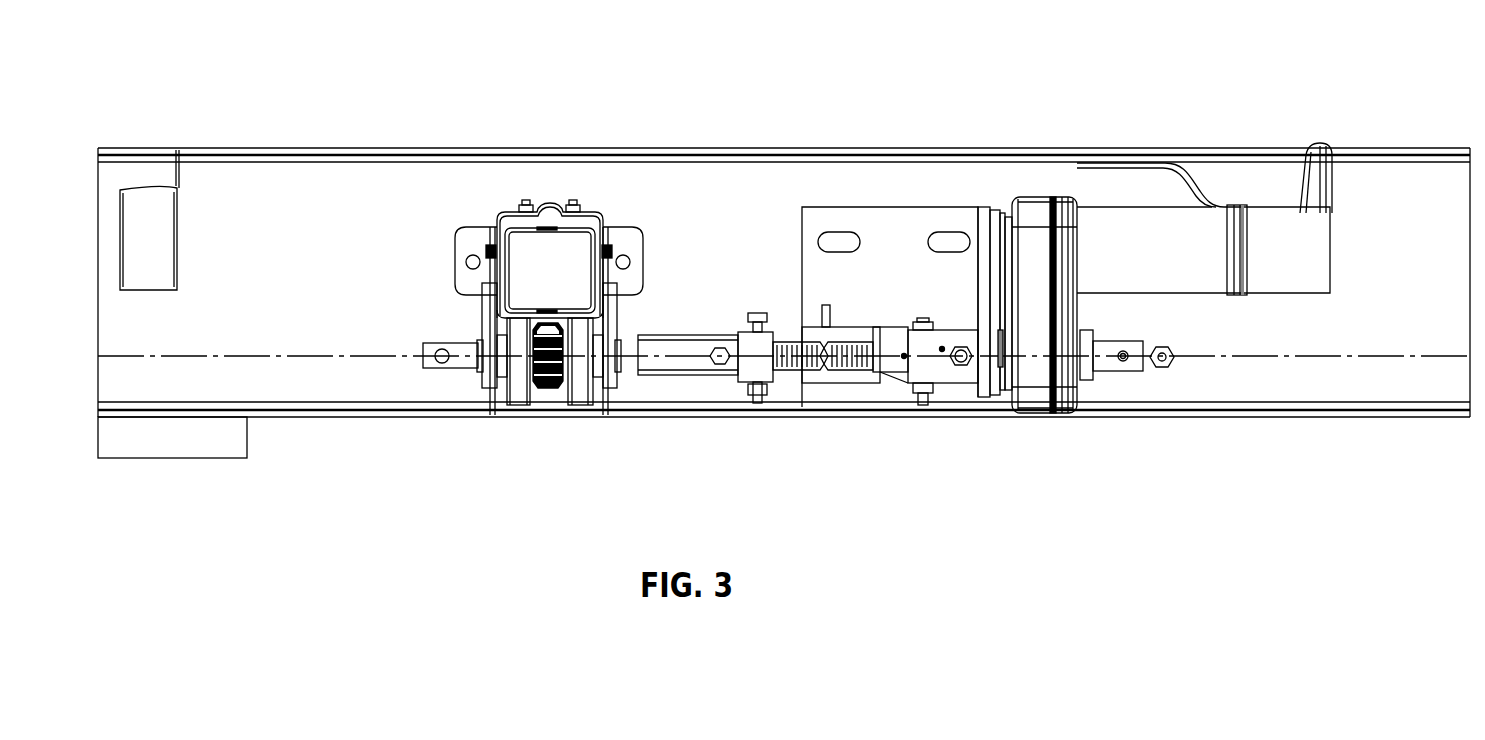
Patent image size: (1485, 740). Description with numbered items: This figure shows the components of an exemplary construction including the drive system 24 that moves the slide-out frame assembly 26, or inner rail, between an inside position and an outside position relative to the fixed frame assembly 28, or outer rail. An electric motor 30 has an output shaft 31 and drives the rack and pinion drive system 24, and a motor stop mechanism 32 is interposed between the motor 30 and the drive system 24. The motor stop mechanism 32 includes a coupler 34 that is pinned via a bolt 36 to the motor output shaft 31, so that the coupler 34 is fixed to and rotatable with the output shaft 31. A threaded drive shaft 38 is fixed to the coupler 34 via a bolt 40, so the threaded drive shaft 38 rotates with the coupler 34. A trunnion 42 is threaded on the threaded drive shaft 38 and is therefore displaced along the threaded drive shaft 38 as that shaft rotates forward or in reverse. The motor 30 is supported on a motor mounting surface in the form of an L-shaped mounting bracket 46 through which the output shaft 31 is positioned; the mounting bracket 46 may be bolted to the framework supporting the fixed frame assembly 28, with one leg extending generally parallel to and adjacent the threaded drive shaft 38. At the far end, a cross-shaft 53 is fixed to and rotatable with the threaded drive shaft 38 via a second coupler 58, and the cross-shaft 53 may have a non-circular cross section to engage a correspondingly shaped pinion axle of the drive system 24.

The drive system 24 is at (517, 437).
The slide-out frame assembly 26 is at (518, 257).
The fixed frame assembly 28 is at (603, 209).
The electric motor 30 is at (1113, 368).
The output shaft 31 is at (982, 367).
The motor stop mechanism 32 is at (783, 242).
The coupler 34 is at (938, 368).
The bolt 36 is at (962, 346).
The threaded drive shaft 38 is at (813, 370).
The bolt 40 is at (920, 320).
The trunnion 42 is at (888, 373).
The L-shaped mounting bracket 46 is at (895, 230).
The cross-shaft 53 is at (672, 365).
The second coupler 58 is at (757, 370).